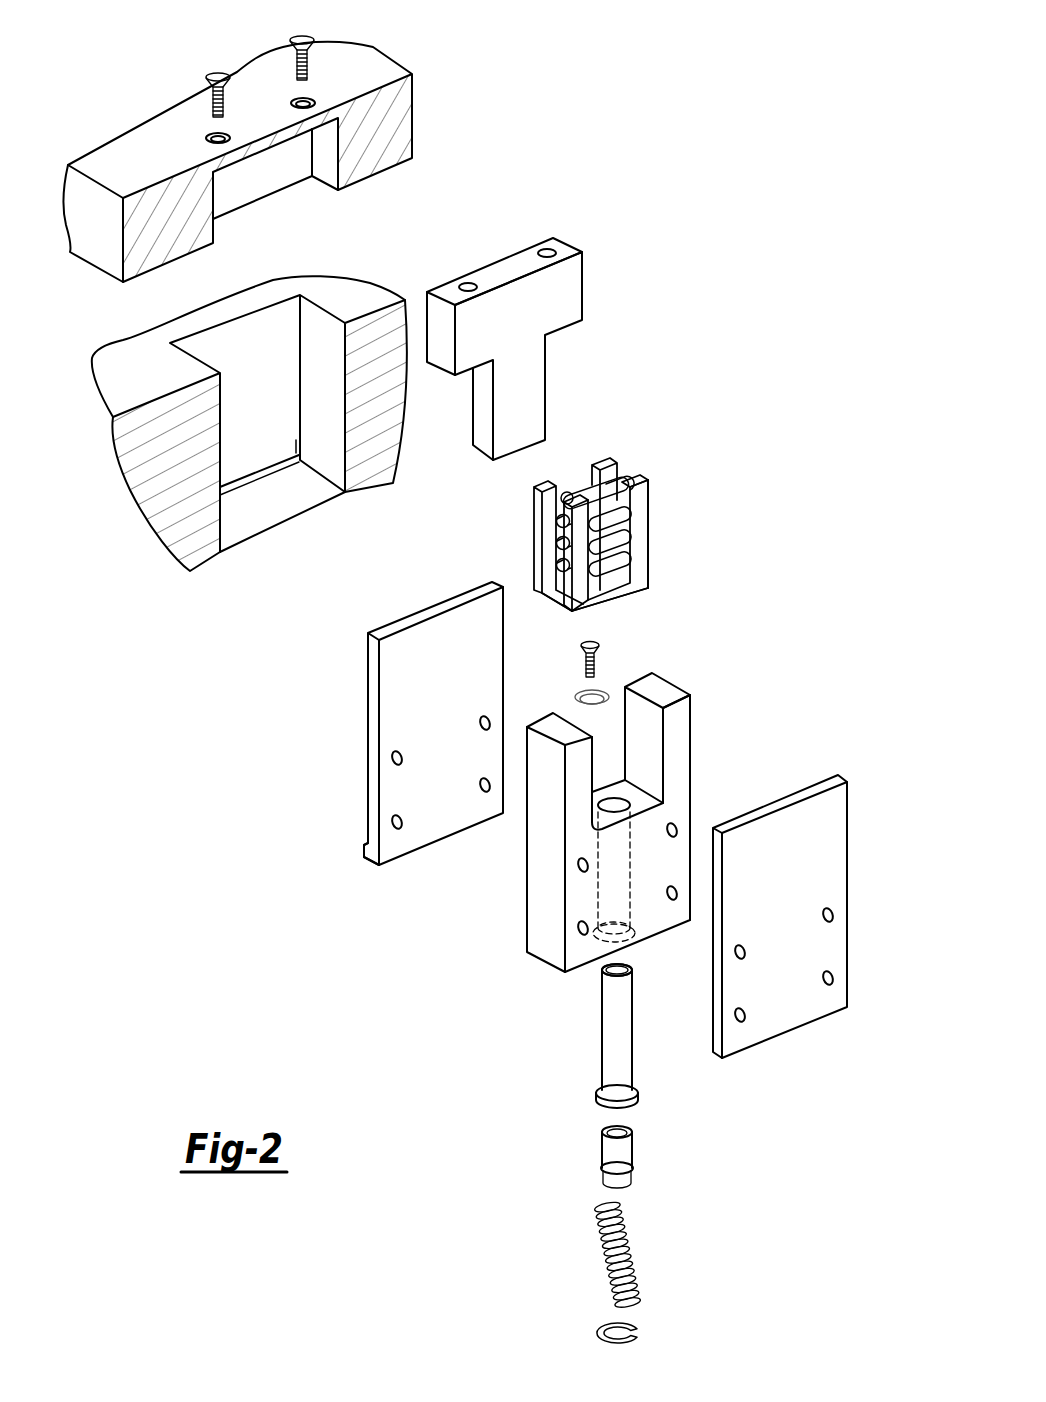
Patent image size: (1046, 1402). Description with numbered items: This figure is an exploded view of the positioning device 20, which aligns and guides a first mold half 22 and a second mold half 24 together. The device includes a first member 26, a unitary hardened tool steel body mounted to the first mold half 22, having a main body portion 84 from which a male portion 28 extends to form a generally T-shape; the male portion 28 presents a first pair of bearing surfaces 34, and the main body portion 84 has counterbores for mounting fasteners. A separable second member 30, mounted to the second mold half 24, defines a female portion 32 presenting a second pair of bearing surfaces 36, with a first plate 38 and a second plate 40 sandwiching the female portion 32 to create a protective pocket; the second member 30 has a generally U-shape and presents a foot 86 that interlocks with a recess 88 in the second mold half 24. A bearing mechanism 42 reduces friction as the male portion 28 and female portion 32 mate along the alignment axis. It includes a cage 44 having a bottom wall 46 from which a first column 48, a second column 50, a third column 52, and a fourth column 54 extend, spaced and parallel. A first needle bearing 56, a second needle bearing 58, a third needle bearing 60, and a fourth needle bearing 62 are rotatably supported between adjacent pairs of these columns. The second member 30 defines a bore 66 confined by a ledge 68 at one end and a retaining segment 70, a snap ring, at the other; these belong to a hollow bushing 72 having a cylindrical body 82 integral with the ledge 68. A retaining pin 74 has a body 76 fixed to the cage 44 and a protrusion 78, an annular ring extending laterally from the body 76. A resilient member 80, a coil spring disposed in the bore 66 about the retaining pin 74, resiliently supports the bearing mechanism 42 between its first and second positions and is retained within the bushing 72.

The positioning device 20 is at (742, 409).
The first mold half 22 is at (358, 60).
The second mold half 24 is at (162, 503).
The first member 26 is at (570, 284).
The male portion 28 is at (530, 415).
The second member 30 is at (550, 945).
The female portion 32 is at (677, 725).
The first pair of bearing surfaces 34 is at (545, 388).
The second pair of bearing surfaces 36 is at (640, 752).
The first plate 38 is at (368, 724).
The second plate 40 is at (827, 850).
The bearing mechanism 42 is at (601, 532).
The cage 44 is at (648, 563).
The bottom wall 46 is at (620, 598).
The first column 48 is at (545, 510).
The second column 50 is at (613, 470).
The third column 52 is at (648, 507).
The fourth column 54 is at (583, 580).
The first needle bearing 56 is at (588, 487).
The second needle bearing 58 is at (622, 486).
The third needle bearing 60 is at (616, 513).
The fourth needle bearing 62 is at (570, 538).
The bore 66 is at (600, 893).
The ledge 68 is at (625, 963).
The retaining segment 70 is at (598, 1335).
The bushing 72 is at (610, 1055).
The retaining pin 74 is at (603, 1150).
The body 76 is at (620, 1150).
The protrusion 78 is at (632, 1170).
The resilient member 80 is at (632, 1250).
The cylindrical body 82 is at (602, 1018).
The main body portion 84 is at (503, 300).
The foot 86 is at (364, 848).
The recess 88 is at (263, 476).